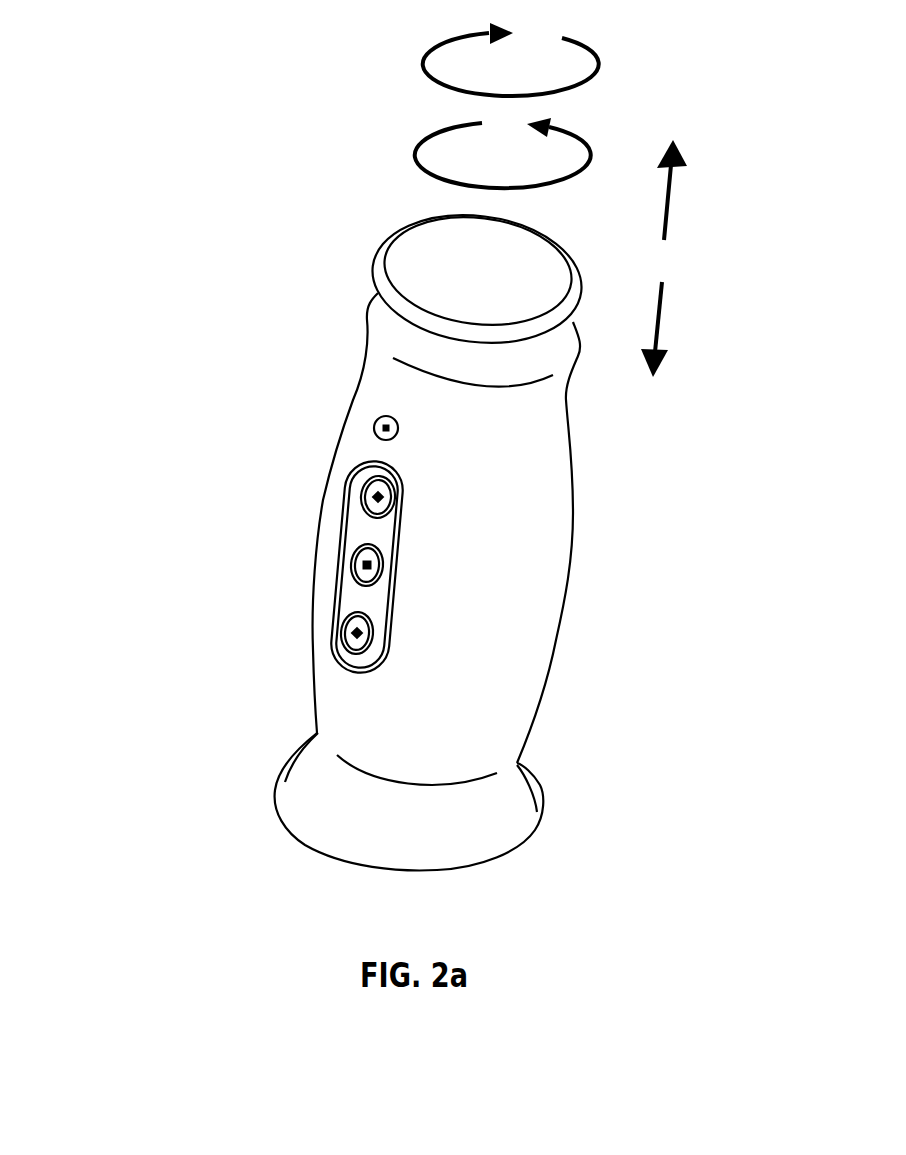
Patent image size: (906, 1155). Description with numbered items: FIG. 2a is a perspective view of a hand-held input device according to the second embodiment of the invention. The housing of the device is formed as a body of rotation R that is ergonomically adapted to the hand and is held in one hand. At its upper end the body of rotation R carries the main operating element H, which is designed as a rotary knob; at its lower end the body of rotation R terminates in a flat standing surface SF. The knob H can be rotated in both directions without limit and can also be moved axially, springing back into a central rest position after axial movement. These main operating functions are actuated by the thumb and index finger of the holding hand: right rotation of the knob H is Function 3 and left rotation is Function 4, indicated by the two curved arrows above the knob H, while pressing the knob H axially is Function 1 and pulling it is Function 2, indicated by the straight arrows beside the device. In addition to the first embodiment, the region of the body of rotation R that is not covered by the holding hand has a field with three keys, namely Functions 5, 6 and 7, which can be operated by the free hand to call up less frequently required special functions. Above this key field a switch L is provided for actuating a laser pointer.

The pressing function 1 is at (698, 329).
The pulling function 2 is at (711, 190).
The right rotation function 3 is at (479, 56).
The left rotation function 4 is at (472, 147).
The first key 5 is at (220, 451).
The second key 6 is at (367, 565).
The third key 7 is at (207, 675).
The main operating element H is at (462, 242).
The switch L is at (395, 426).
The body of rotation R is at (483, 612).
The standing surface SF is at (540, 822).